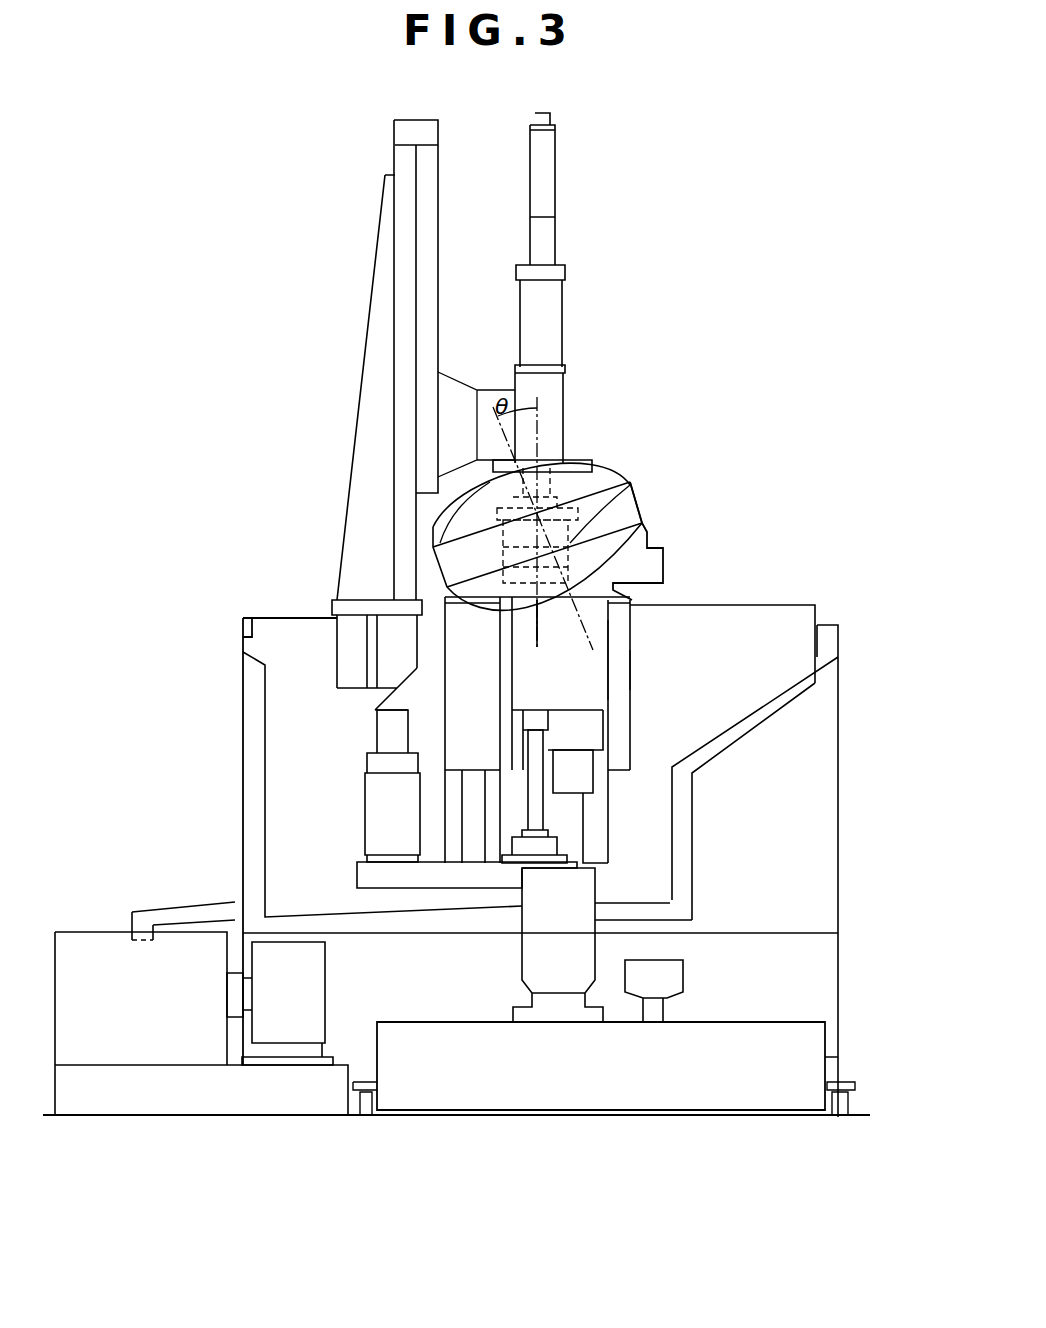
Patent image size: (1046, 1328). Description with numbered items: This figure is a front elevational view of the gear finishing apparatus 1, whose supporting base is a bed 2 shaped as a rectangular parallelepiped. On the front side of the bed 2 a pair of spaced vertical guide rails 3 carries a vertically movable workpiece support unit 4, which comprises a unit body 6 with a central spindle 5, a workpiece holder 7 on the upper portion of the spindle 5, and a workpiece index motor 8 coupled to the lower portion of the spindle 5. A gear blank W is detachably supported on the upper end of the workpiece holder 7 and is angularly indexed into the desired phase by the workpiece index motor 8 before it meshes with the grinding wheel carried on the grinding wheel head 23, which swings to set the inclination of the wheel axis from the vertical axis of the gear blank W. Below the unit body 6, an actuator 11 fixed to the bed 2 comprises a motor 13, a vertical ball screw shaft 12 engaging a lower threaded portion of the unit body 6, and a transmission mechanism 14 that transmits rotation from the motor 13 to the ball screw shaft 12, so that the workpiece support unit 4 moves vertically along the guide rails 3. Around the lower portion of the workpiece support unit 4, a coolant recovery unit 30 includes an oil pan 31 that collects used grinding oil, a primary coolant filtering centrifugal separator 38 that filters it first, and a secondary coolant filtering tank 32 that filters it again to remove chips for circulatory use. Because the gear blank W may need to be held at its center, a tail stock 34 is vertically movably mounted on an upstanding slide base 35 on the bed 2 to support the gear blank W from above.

The gear finishing apparatus 1 is at (757, 153).
The bed 2 is at (781, 615).
The vertical guide rails 3 is at (595, 830).
The workpiece support unit 4 is at (632, 690).
The spindle 5 is at (550, 633).
The unit body 6 is at (620, 652).
The workpiece holder 7 is at (642, 523).
The workpiece index motor 8 is at (578, 762).
The actuator 11 is at (313, 780).
The ball screw shaft 12 is at (543, 817).
The motor 13 is at (382, 820).
The transmission mechanism 14 is at (370, 879).
The grinding wheel head 23 is at (630, 482).
The coolant recovery unit 30 is at (397, 1122).
The oil pan 31 is at (735, 734).
The secondary coolant filtering tank 32 is at (573, 1100).
The tail stock 34 is at (550, 314).
The slide base 35 is at (402, 302).
The primary coolant filtering centrifugal separator 38 is at (83, 948).
The gear blank W is at (537, 513).